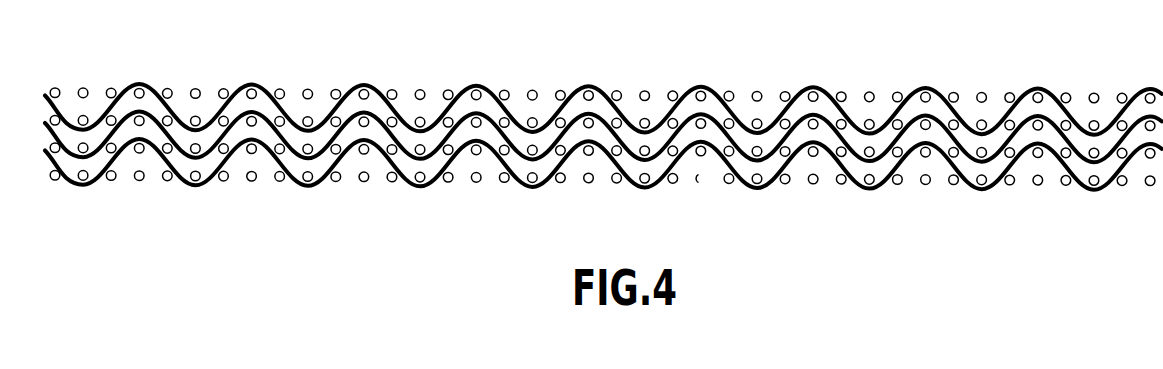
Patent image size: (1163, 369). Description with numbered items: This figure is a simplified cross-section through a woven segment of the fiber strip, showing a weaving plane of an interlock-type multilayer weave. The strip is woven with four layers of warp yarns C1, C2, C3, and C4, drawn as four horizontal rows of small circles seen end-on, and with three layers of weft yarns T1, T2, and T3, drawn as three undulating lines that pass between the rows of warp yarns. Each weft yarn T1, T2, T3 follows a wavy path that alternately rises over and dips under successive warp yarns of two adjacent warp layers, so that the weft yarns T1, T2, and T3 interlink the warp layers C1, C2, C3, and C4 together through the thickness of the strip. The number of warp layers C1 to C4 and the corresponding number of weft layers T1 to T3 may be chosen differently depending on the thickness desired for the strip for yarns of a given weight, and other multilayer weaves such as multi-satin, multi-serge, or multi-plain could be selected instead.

The weft yarn layer T1 is at (138, 82).
The weft yarn layer T2 is at (243, 112).
The weft yarn layer T3 is at (355, 141).
The warp yarn layer C1 is at (584, 96).
The warp yarn layer C2 is at (584, 124).
The warp yarn layer C3 is at (584, 151).
The warp yarn layer C4 is at (584, 179).